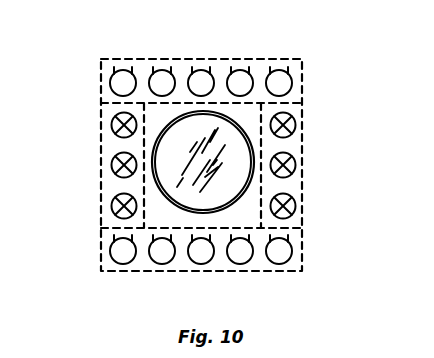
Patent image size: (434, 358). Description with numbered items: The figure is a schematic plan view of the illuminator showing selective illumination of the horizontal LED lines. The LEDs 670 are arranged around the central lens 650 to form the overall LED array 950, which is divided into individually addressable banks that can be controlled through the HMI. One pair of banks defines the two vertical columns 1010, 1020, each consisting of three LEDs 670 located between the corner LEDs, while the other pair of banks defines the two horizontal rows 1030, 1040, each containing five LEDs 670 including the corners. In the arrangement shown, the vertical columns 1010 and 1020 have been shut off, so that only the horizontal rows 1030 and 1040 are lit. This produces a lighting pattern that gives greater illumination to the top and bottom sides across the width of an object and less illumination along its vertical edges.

The lens 650 is at (245, 162).
The LEDs 670 is at (205, 164).
The LED array 950 is at (306, 66).
The vertical column 1010 is at (109, 211).
The vertical column 1020 is at (296, 168).
The horizontal row 1030 is at (279, 63).
The horizontal row 1040 is at (222, 272).